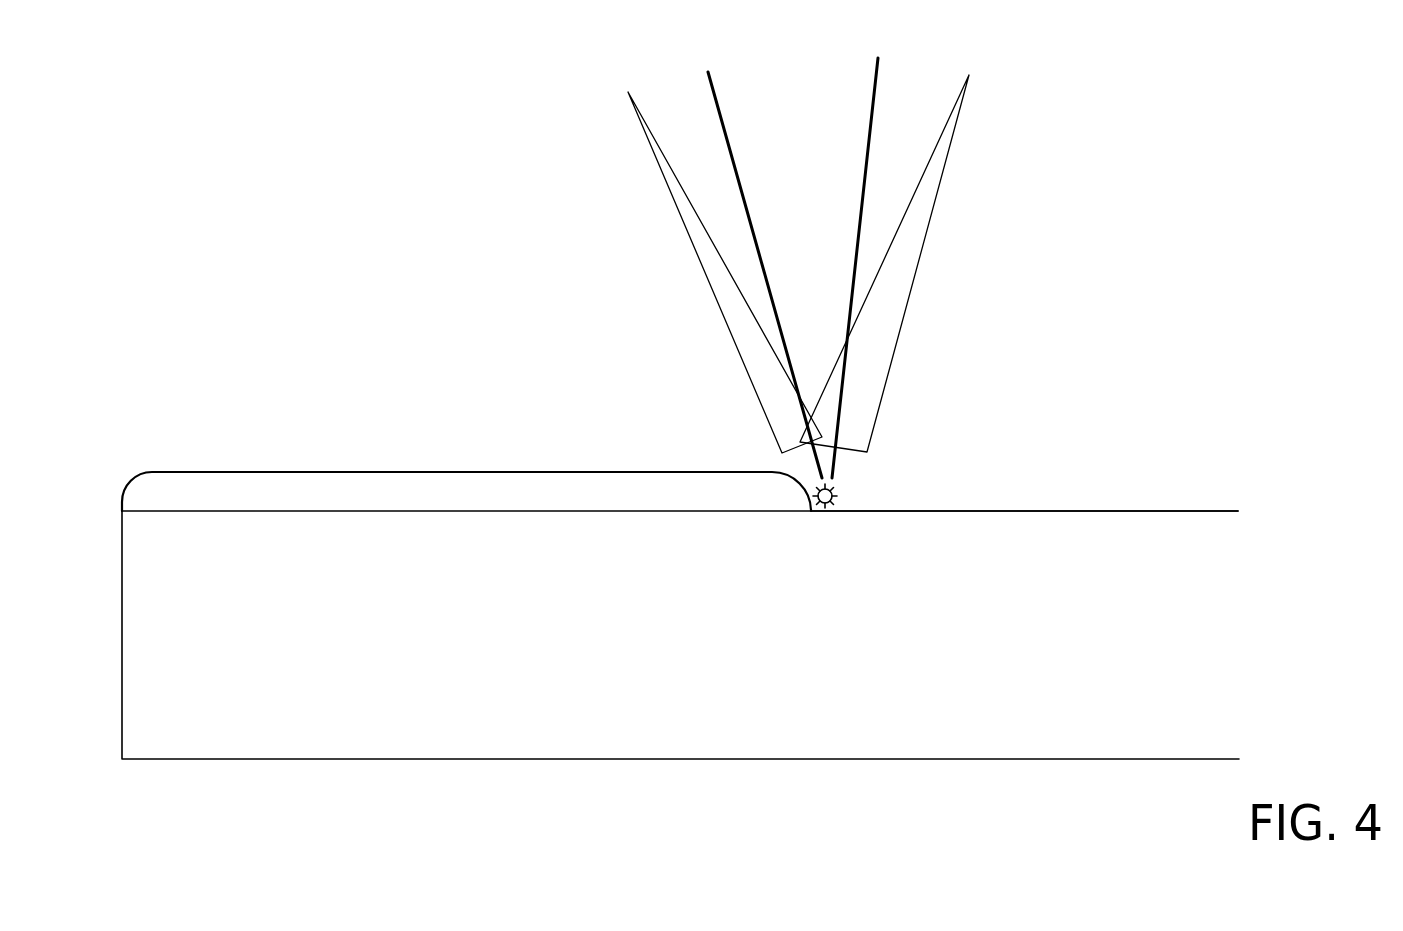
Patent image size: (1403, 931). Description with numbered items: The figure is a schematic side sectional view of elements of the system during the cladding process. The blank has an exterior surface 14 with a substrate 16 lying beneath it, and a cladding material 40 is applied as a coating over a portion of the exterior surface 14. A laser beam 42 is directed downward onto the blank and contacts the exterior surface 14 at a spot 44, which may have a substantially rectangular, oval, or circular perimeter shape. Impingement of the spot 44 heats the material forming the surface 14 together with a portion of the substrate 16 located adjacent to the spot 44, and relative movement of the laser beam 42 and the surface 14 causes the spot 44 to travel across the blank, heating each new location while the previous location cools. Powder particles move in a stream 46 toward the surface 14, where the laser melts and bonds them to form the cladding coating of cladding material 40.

The exterior surface 14 is at (1075, 508).
The substrate 16 is at (988, 538).
The cladding material 40 is at (362, 472).
The laser beam 42 is at (862, 210).
The spot 44 is at (837, 497).
The stream 46 is at (730, 332).